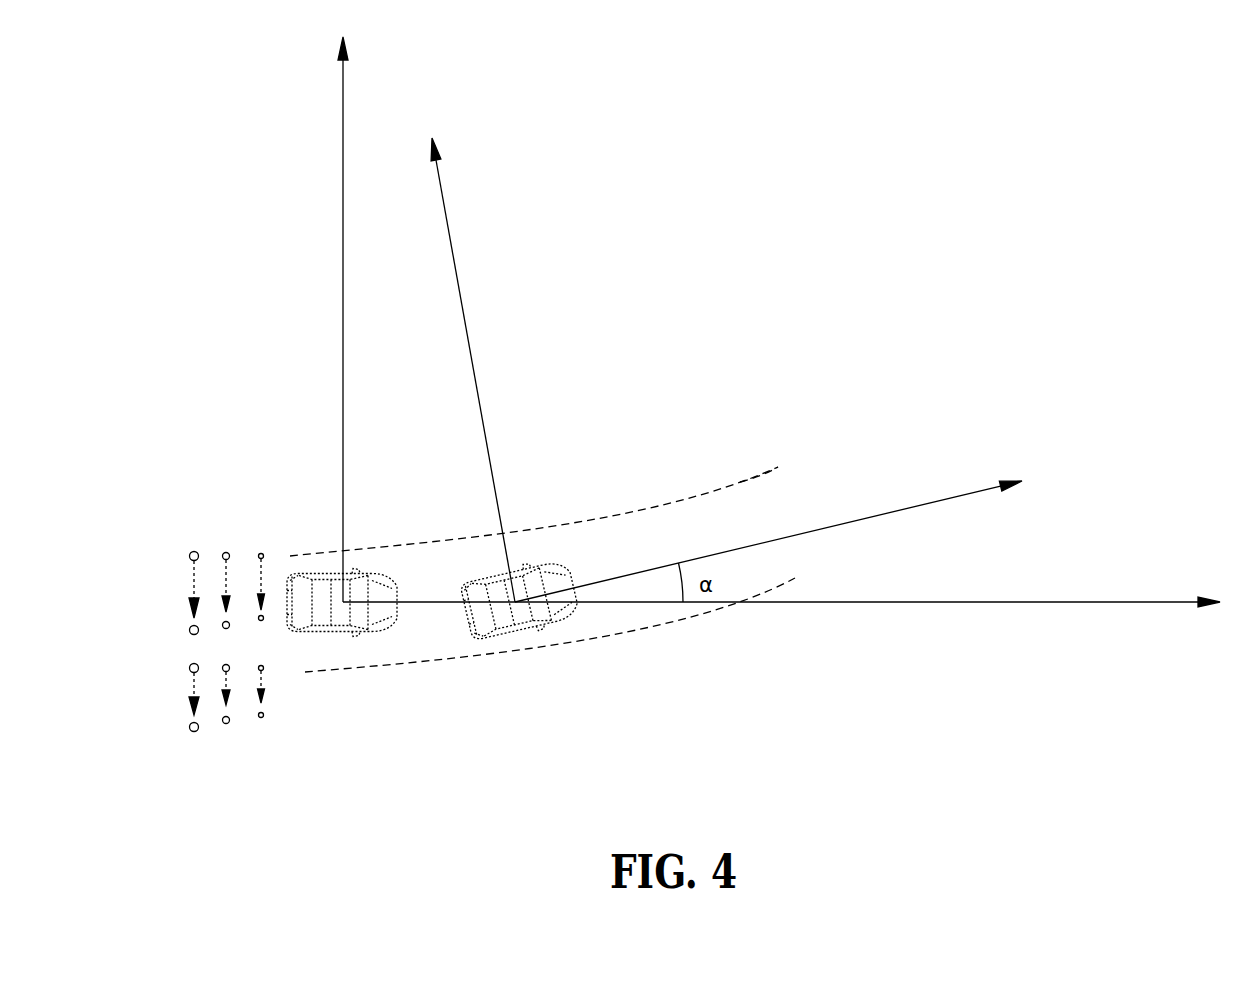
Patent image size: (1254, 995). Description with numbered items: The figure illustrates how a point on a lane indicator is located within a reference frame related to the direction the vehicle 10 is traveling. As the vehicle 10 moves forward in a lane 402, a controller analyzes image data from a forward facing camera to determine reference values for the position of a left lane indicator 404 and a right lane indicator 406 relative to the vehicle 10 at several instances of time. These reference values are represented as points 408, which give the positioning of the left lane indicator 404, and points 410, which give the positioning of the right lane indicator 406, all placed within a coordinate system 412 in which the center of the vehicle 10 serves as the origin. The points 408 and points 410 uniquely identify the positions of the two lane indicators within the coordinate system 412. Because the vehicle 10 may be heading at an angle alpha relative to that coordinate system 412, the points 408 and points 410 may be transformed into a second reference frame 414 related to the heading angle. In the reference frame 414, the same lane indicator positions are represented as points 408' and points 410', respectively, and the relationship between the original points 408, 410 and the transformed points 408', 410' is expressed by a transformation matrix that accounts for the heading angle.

The vehicle 10 is at (355, 622).
The lane 402 is at (610, 537).
The left lane indicator 404 is at (758, 477).
The right lane indicator 406 is at (578, 645).
The points 408 is at (193, 569).
The points 408' is at (191, 607).
The points 410 is at (193, 682).
The points 410' is at (191, 711).
The coordinate system 412 is at (343, 255).
The reference frame 414 is at (910, 506).